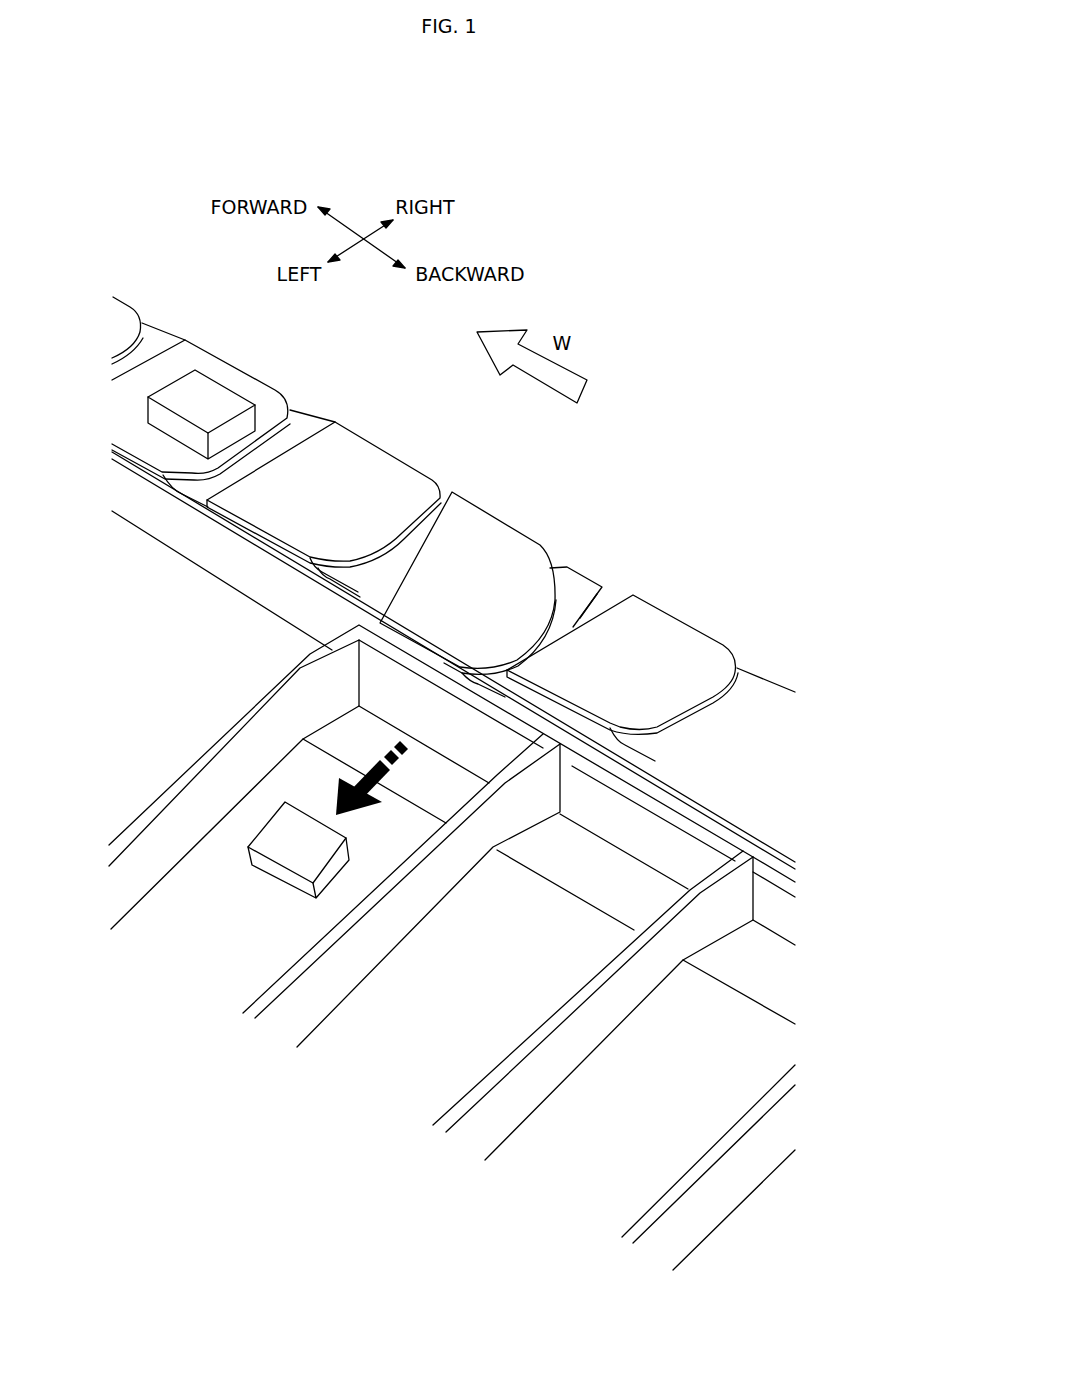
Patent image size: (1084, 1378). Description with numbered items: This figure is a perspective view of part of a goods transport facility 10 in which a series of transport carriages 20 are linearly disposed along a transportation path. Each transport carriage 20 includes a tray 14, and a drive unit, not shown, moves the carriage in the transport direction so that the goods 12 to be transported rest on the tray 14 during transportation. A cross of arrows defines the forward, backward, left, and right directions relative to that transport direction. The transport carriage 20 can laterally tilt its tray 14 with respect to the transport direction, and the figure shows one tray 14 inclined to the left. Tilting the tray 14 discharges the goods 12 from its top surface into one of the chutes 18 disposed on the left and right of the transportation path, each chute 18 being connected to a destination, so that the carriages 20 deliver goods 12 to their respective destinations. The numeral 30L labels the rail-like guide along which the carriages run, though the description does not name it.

The goods transport facility 10 is at (143, 230).
The goods 12 is at (204, 393).
The tray 14 is at (352, 455).
The chutes 18 is at (396, 1050).
The transport carriages 20 is at (405, 462).
The left rail 30L is at (222, 560).